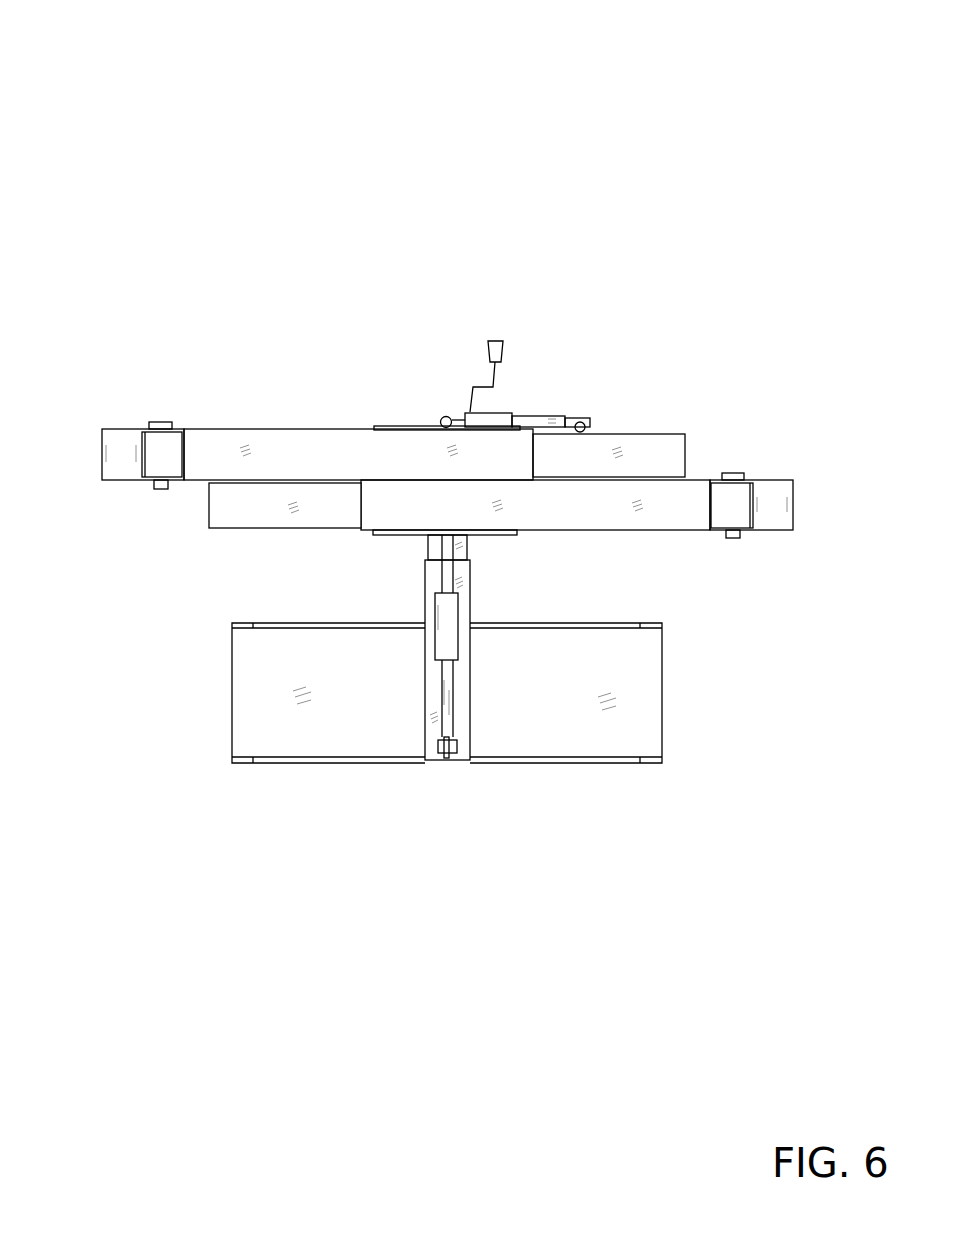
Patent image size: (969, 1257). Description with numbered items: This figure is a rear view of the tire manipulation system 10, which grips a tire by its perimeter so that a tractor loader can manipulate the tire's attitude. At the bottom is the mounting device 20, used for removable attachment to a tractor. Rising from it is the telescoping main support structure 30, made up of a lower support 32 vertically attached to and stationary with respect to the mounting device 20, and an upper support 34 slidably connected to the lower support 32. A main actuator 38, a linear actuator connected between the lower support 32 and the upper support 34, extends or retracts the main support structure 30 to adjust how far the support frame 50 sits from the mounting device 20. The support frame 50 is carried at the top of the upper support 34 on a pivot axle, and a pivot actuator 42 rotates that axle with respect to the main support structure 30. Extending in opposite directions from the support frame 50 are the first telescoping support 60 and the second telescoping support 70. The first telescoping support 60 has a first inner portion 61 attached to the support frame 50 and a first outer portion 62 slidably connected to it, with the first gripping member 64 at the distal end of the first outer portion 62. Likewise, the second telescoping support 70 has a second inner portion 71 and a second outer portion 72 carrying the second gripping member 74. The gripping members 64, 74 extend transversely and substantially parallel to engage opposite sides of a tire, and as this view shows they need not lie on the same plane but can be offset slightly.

The tire manipulation system 10 is at (185, 122).
The mounting device 20 is at (650, 718).
The main support structure 30 is at (485, 725).
The lower support 32 is at (425, 690).
The upper support 34 is at (427, 548).
The main actuator 38 is at (458, 608).
The pivot actuator 42 is at (523, 418).
The support frame 50 is at (398, 425).
The first telescoping support 60 is at (273, 418).
The first inner portion 61 is at (223, 447).
The first outer portion 62 is at (645, 452).
The first gripping member 64 is at (102, 455).
The second telescoping support 70 is at (645, 545).
The second inner portion 71 is at (675, 518).
The second outer portion 72 is at (258, 507).
The second gripping member 74 is at (793, 504).